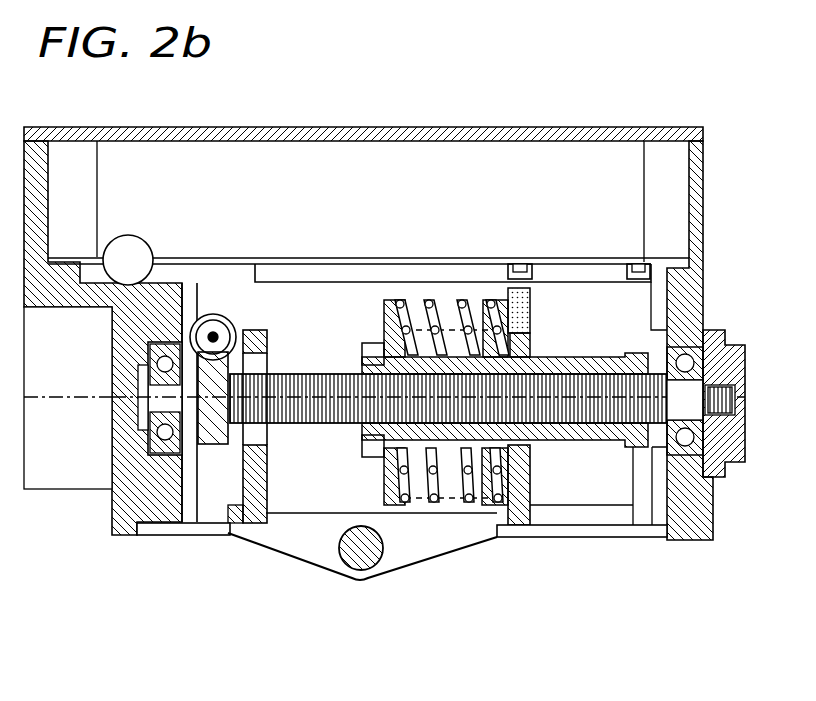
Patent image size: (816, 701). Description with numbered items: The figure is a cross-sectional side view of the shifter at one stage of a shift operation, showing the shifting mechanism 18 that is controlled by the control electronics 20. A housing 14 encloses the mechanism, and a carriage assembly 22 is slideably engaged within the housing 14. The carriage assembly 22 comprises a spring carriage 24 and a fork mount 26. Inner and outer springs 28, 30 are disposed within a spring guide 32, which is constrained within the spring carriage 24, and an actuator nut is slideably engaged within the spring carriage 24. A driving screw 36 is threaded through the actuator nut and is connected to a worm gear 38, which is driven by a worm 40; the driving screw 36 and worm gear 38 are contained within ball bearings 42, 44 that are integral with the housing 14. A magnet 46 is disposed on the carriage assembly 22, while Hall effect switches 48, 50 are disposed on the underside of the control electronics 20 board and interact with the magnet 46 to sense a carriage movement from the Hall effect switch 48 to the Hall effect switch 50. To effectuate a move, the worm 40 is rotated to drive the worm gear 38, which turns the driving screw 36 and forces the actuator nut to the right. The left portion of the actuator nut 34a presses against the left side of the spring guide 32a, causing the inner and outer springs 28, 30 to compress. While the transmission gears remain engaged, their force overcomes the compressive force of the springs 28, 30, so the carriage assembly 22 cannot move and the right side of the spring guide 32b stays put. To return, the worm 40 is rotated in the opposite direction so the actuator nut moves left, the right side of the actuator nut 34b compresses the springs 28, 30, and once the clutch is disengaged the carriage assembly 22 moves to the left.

The housing 14 is at (713, 152).
The shifting mechanism 18 is at (125, 576).
The control electronics 20 is at (283, 258).
The carriage assembly 22 is at (253, 573).
The spring carriage 24 is at (228, 538).
The fork mount 26 is at (378, 565).
The inner spring 28 is at (445, 328).
The outer spring 30 is at (400, 300).
The spring guide 32 is at (449, 369).
The left side of the spring guide 32a is at (384, 302).
The right side of the spring guide 32b is at (502, 305).
The left portion of the actuator nut 34a is at (362, 345).
The right side of the actuator nut 34b is at (632, 356).
The driving screw 36 is at (540, 438).
The worm gear 38 is at (213, 447).
The worm 40 is at (212, 314).
The ball bearing 42 is at (148, 445).
The ball bearing 44 is at (715, 468).
The magnet 46 is at (530, 296).
The Hall effect switch 48 is at (523, 266).
The Hall effect switch 50 is at (632, 266).